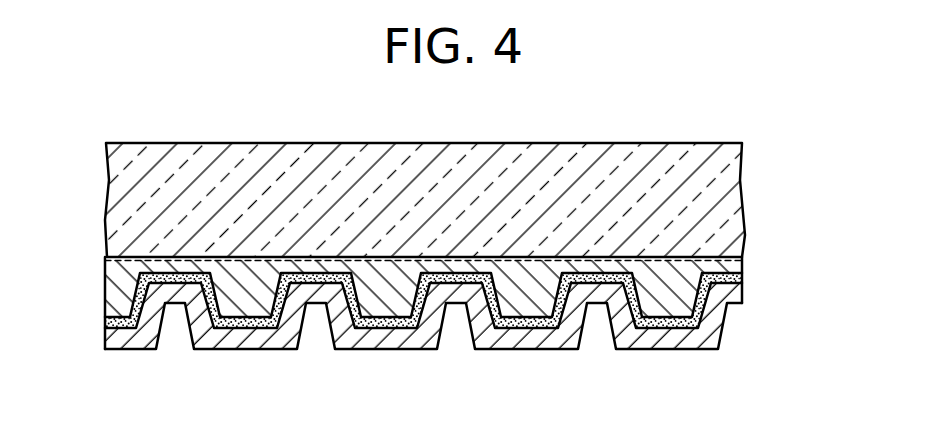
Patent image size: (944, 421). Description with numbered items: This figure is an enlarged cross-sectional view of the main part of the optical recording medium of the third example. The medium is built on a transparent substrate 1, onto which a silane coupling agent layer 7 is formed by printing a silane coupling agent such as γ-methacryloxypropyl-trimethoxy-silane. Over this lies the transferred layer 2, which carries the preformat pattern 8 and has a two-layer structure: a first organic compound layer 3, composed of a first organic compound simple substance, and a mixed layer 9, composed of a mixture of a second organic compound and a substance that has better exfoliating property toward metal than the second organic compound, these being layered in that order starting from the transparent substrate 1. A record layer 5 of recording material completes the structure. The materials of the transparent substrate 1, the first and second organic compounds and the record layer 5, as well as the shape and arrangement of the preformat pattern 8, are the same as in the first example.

The transparent substrate 1 is at (668, 170).
The transferred layer 2 is at (480, 303).
The first organic compound layer 3 is at (743, 265).
The mixed layer 9 is at (743, 278).
The silane coupling agent layer 7 is at (115, 261).
The record layer 5 is at (548, 340).
The preformat pattern 8 is at (580, 338).